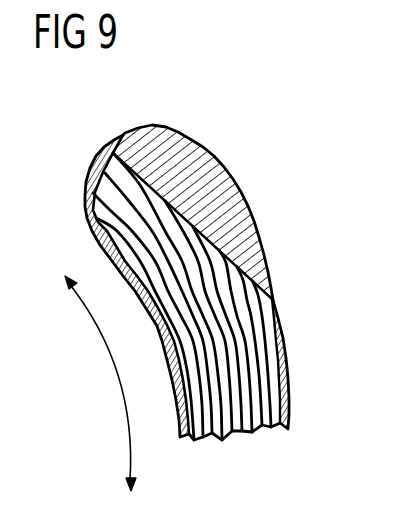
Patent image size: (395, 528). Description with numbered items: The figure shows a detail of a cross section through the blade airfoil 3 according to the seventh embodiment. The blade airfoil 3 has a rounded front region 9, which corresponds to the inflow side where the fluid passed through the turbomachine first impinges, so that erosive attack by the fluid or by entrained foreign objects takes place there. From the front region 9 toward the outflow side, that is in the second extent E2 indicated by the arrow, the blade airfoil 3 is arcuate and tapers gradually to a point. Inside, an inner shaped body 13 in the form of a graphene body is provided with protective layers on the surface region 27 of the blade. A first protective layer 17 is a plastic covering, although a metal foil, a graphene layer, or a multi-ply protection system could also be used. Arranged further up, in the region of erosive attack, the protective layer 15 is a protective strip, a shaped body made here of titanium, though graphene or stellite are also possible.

The surface region 27 is at (196, 110).
The rounded front region 9 is at (192, 261).
The blade airfoil 3 is at (241, 142).
The protective strip 15 is at (230, 207).
The first protective layer 17 is at (90, 217).
The inner shaped body 13 is at (236, 391).
The second extent E2 is at (116, 384).